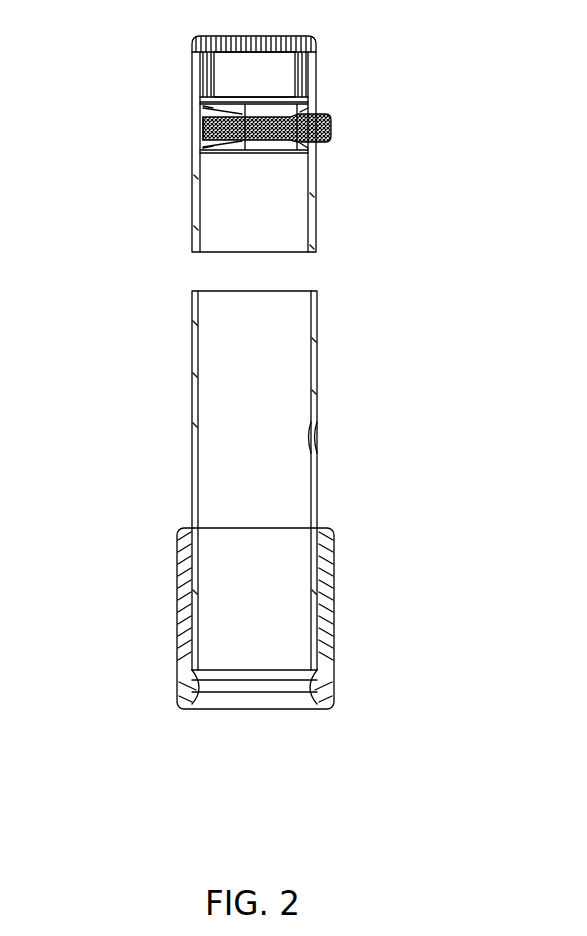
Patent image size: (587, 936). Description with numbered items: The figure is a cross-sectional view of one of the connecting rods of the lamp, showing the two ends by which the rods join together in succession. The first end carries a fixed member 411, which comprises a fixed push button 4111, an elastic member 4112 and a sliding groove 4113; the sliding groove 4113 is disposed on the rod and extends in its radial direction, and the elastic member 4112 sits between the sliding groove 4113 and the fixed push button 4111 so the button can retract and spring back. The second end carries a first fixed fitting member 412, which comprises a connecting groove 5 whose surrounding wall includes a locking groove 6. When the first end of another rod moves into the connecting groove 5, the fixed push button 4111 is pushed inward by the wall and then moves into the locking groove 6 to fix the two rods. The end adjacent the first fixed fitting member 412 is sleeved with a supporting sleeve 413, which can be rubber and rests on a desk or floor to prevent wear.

The fixed member 411 is at (172, 91).
The fixed push button 4111 is at (331, 123).
The elastic member 4112 is at (200, 131).
The sliding groove 4113 is at (298, 103).
The first fixed fitting member 412 is at (153, 634).
The supporting sleeve 413 is at (322, 670).
The connecting groove 5 is at (258, 570).
The locking groove 6 is at (312, 433).